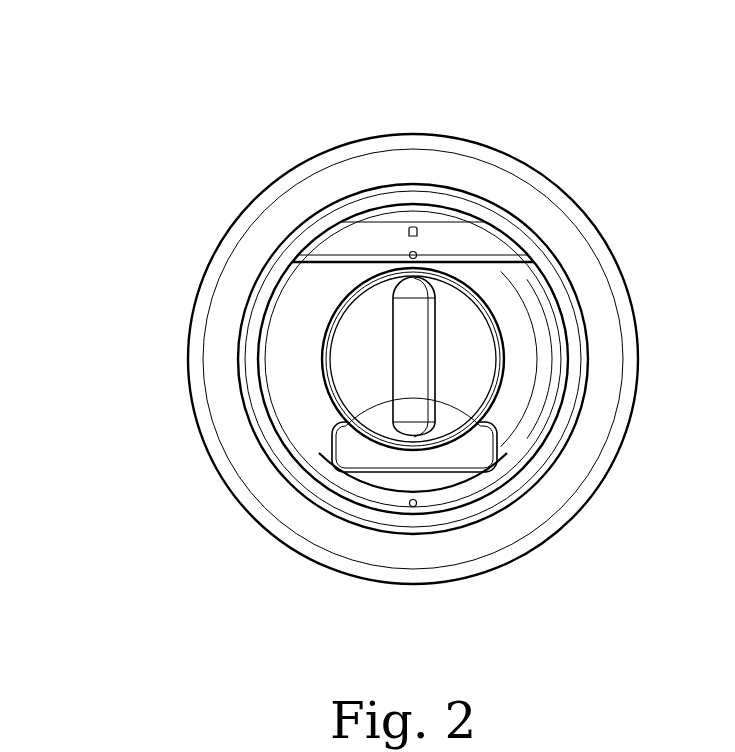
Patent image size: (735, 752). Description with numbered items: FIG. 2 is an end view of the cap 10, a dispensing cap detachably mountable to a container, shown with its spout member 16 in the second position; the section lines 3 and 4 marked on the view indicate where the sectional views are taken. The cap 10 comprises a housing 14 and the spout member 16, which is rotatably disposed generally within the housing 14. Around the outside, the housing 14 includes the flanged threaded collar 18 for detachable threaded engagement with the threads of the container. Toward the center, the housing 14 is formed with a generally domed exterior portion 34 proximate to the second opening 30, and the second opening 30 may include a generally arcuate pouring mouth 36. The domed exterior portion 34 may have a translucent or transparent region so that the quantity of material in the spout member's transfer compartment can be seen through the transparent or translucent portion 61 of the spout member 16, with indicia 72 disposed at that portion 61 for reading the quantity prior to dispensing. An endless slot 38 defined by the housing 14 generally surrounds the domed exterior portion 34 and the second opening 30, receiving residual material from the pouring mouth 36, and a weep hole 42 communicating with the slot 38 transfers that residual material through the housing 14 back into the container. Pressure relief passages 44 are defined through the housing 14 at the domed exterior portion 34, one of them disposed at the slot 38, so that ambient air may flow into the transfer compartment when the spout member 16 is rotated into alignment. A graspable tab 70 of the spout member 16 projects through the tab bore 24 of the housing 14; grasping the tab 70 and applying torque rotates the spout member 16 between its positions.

The section line 3- 3 is at (364, 67).
The section line 4- 4 is at (120, 404).
The cap 10 is at (527, 118).
The housing 14 is at (543, 162).
The spout member 16 is at (485, 467).
The flanged threaded collar 18 is at (262, 507).
The tab bore 24 is at (338, 381).
The second opening 30 is at (495, 462).
The domed exterior portion 34 is at (292, 332).
The pouring mouth 36 is at (367, 485).
The slot 38 is at (327, 233).
The weep hole 42 is at (416, 507).
The pressure relief passage 44 is at (413, 226).
The transparent or translucent portion 61 is at (520, 382).
The tab 70 is at (415, 356).
The indicia 72 is at (388, 222).